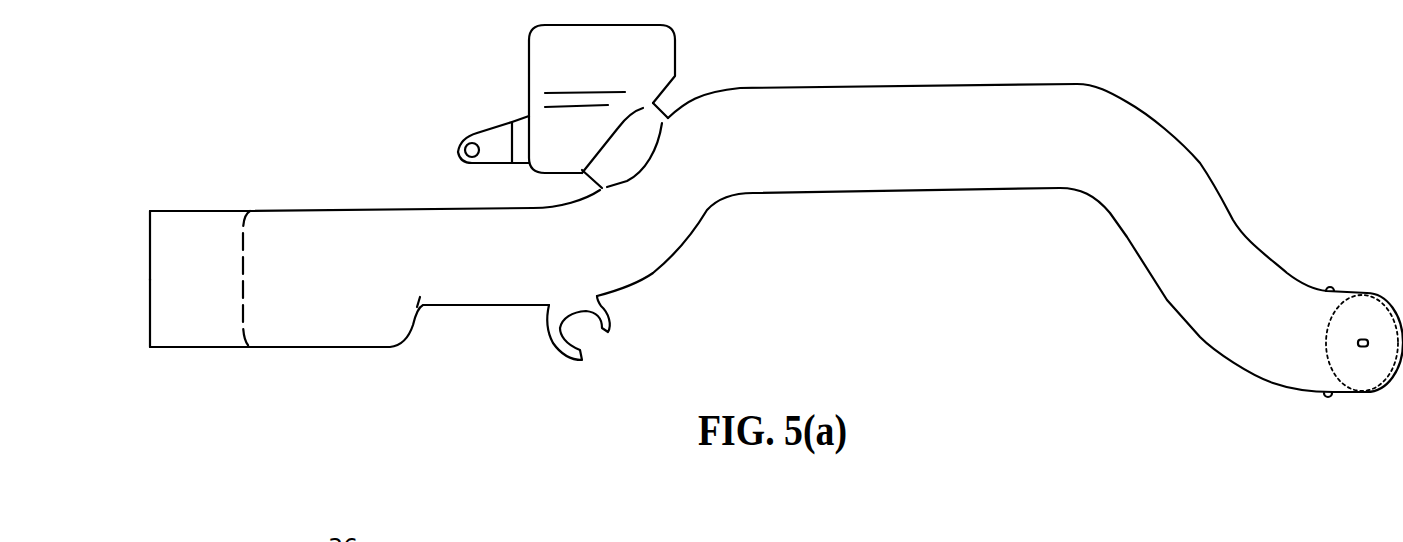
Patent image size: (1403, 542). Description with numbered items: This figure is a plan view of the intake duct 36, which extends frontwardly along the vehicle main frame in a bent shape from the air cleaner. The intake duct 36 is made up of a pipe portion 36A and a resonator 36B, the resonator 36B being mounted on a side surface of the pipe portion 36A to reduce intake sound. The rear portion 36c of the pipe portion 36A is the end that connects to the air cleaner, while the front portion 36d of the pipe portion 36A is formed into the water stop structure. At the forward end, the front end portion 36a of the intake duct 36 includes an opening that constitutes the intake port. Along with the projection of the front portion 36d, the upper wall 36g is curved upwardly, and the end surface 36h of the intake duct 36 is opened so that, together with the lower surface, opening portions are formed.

The intake duct 36 is at (373, 103).
The pipe portion 36A is at (1203, 155).
The resonator 36B is at (526, 50).
The front end portion 36a is at (148, 322).
The rear portion 36c is at (1353, 292).
The front portion 36d is at (212, 206).
The upper wall 36g is at (293, 228).
The end surface 36h is at (148, 257).